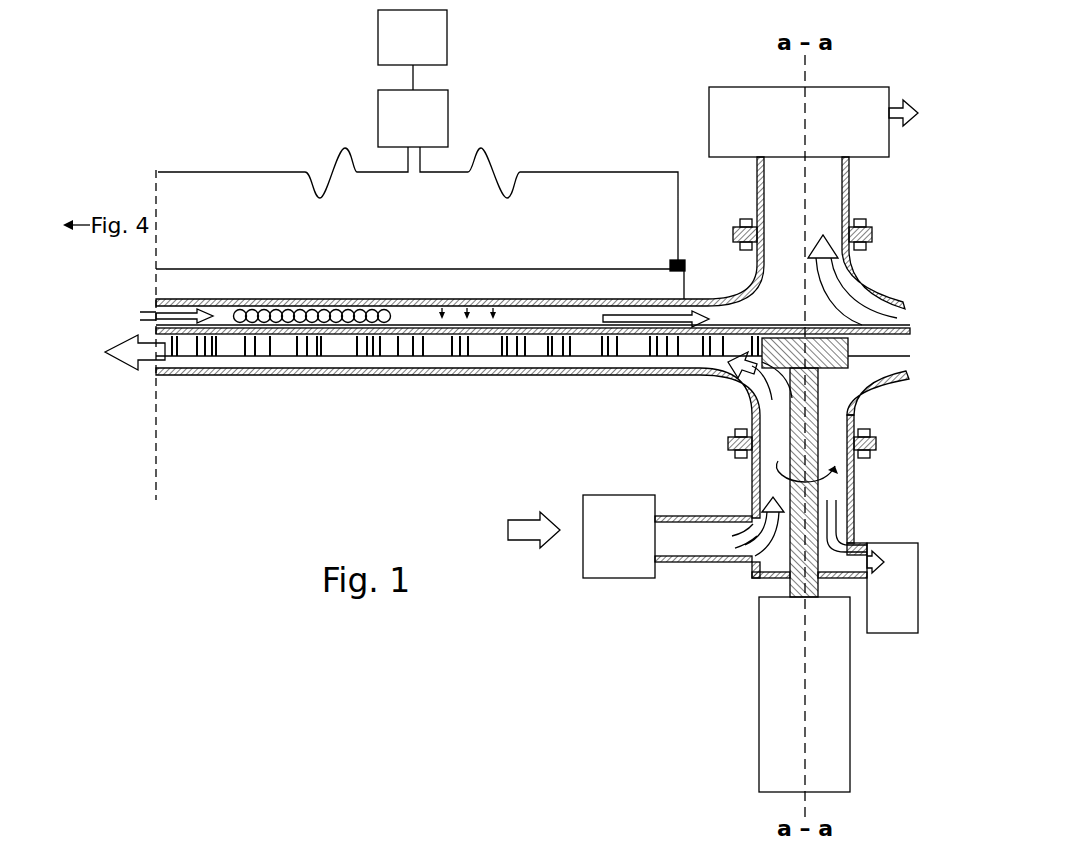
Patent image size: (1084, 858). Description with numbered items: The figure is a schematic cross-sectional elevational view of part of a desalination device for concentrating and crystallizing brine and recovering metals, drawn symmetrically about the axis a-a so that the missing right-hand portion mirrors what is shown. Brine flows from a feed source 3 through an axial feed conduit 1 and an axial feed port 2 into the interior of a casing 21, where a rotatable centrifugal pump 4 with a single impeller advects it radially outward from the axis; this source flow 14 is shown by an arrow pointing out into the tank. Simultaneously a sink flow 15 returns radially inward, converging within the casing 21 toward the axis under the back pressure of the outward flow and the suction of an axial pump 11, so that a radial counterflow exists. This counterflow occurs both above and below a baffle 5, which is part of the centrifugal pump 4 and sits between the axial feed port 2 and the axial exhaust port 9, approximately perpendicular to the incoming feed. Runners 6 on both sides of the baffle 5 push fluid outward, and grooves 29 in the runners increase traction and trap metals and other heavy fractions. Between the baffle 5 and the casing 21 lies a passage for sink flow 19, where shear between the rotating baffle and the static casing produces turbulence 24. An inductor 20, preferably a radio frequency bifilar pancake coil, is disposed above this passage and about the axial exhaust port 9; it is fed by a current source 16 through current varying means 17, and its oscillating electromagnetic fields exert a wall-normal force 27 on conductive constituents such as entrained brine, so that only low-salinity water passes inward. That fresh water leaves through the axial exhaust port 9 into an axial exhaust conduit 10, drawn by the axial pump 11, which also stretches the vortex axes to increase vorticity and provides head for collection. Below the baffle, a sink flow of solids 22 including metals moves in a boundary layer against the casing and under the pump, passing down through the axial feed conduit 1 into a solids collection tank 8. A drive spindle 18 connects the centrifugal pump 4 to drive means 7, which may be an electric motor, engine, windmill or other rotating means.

The axial feed conduit 1 is at (752, 466).
The axial feed port 2 is at (788, 392).
The feed source 3 is at (646, 536).
The rotatable centrifugal pump 4 is at (218, 390).
The baffle 5 is at (353, 334).
The runners 6 is at (468, 347).
The drive means 7 is at (759, 666).
The solids collection tank 8 is at (892, 588).
The axial exhaust port 9 is at (771, 302).
The axial exhaust conduit 10 is at (757, 192).
The axial pump 11 is at (709, 128).
The source flow 14 is at (123, 362).
The sink flow 15 is at (156, 306).
The current source 16 is at (412, 37).
The current varying means 17 is at (413, 106).
The drive spindle 18 is at (790, 546).
The passage for sink flow 19 is at (255, 304).
The inductor 20 is at (295, 268).
The casing 21 is at (216, 298).
The sink flow of solids 22 is at (833, 504).
The turbulence 24 is at (348, 307).
The wall-normal force 27 is at (445, 304).
The grooves 29 is at (562, 348).